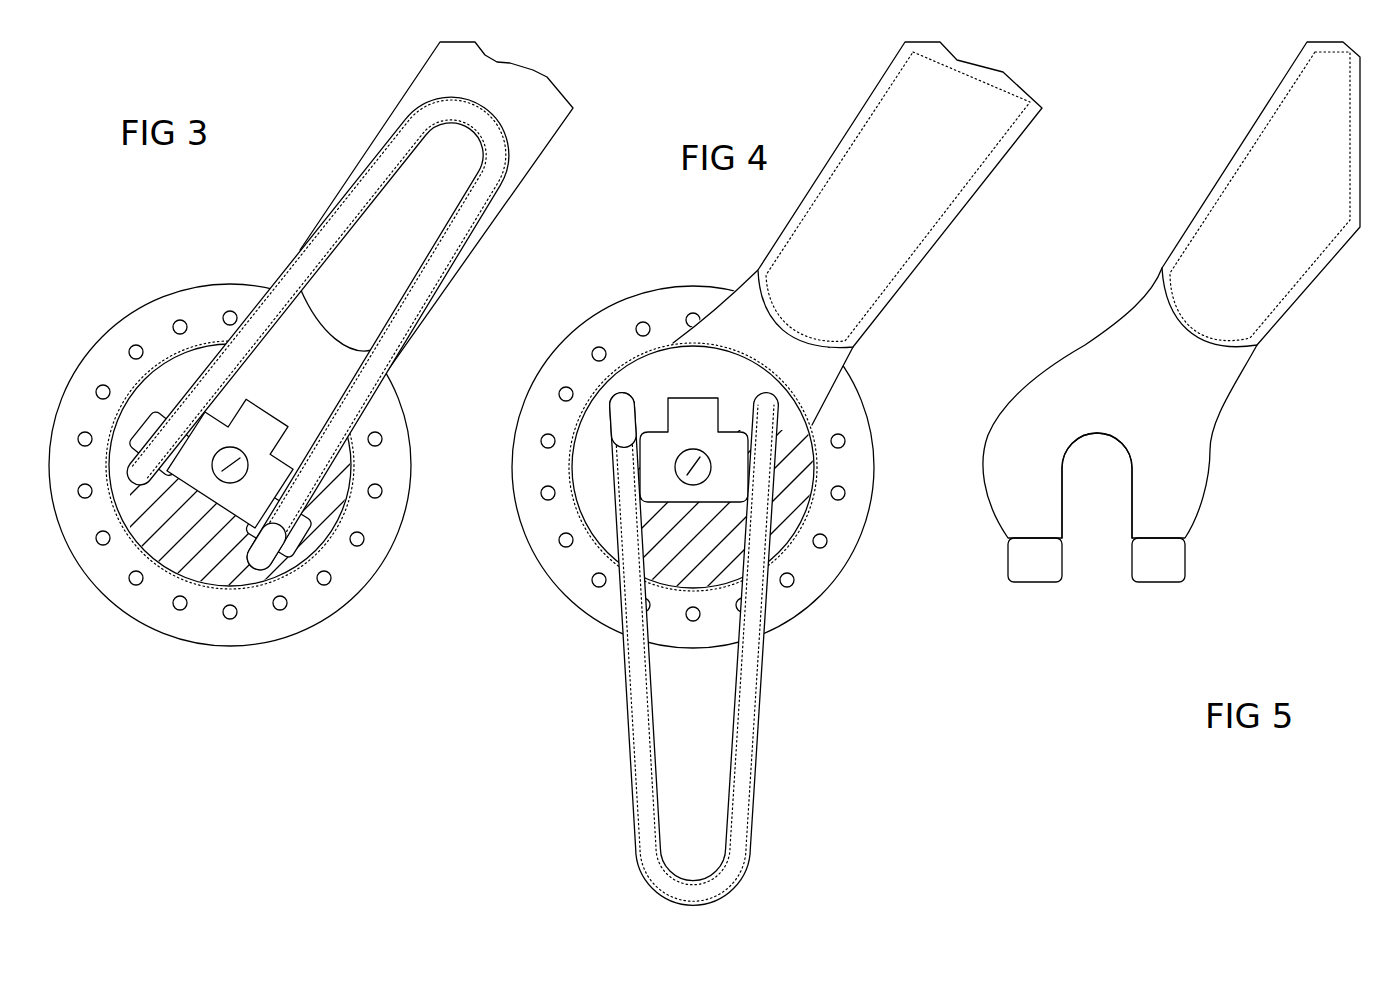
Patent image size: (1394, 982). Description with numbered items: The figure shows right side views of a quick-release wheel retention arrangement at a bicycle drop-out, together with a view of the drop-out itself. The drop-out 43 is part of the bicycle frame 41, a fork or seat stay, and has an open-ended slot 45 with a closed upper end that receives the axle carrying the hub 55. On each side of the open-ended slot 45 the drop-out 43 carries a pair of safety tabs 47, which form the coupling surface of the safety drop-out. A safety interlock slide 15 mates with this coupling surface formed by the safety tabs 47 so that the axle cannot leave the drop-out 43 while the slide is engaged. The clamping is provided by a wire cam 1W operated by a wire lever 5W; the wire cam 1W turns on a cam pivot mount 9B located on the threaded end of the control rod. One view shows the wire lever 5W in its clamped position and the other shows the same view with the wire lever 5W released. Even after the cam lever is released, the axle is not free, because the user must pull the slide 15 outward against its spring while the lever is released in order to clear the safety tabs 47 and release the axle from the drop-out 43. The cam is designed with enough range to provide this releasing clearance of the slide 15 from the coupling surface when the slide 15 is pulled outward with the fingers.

In FIG. 3, the wire cam 1W is at (252, 560).
In FIG. 4, the wire cam 1W is at (618, 402).
In FIG. 3, the wire lever 5W is at (285, 288).
In FIG. 4, the wire lever 5W is at (630, 783).
In FIG. 3, the cam pivot mount for wire cam on threaded end of control rod 9B is at (257, 503).
In FIG. 4, the cam pivot mount for wire cam on threaded end of control rod 9B is at (735, 482).
In FIG. 3, the safety interlock slide or washer 15 is at (308, 527).
In FIG. 4, the safety interlock slide or washer 15 is at (695, 382).
In FIG. 3, the bicycle frame 41 is at (410, 88).
In FIG. 4, the bicycle frame 41 is at (915, 152).
In FIG. 5, the bicycle frame 41 is at (1295, 185).
In FIG. 3, the drop-out 43 is at (383, 377).
In FIG. 4, the drop-out 43 is at (797, 362).
In FIG. 5, the drop-out 43 is at (1148, 396).
In FIG. 5, the open-ended slot 45 is at (1097, 525).
In FIG. 5, the safety tab 47 is at (1038, 568).
In FIG. 3, the hub 55 is at (165, 300).
In FIG. 4, the hub 55 is at (633, 298).